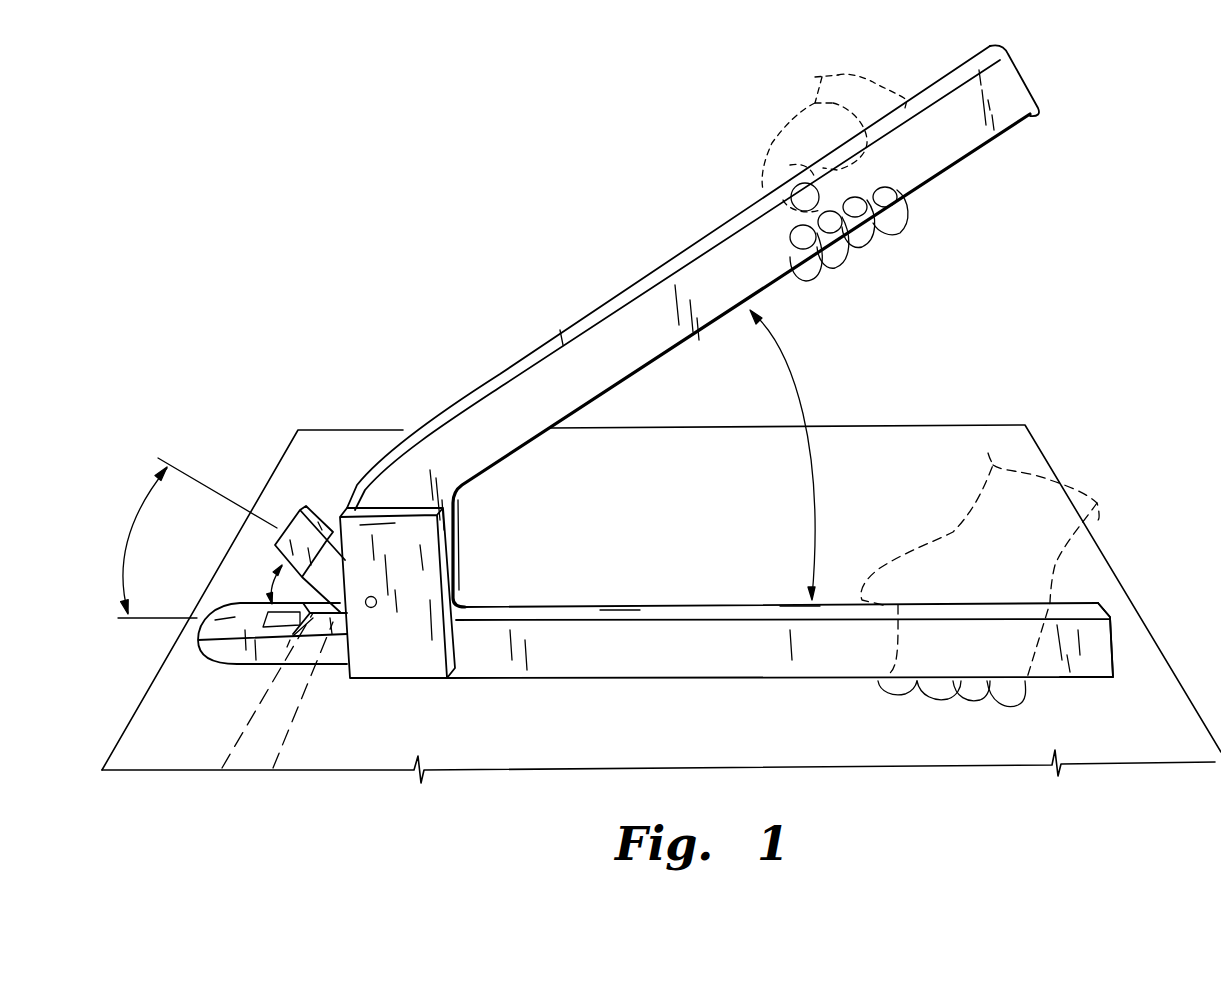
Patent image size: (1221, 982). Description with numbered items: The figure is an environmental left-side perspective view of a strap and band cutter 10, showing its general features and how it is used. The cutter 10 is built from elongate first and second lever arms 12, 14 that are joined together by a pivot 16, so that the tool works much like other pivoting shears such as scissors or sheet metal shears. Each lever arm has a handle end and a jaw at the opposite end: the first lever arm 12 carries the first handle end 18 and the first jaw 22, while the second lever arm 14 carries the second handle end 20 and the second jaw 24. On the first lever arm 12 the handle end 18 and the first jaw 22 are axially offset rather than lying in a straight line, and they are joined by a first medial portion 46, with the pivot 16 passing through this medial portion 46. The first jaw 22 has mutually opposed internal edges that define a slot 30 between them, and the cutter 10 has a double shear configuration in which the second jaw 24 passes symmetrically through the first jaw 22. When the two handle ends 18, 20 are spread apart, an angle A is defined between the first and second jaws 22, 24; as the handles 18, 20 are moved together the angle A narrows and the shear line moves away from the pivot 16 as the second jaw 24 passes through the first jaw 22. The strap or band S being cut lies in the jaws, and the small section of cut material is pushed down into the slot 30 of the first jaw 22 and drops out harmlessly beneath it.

The strap and band cutter 10 is at (262, 157).
The first lever arm 12 is at (597, 305).
The second lever arm 14 is at (663, 682).
The pivot 16 is at (372, 608).
The first handle end 18 is at (983, 153).
The second handle end 20 is at (1105, 680).
The first jaw 22 is at (237, 665).
The second jaw 24 is at (327, 533).
The slot 30 is at (327, 622).
The first medial portion 46 is at (457, 565).
The angle A is at (133, 537).
The strap or band S is at (233, 748).